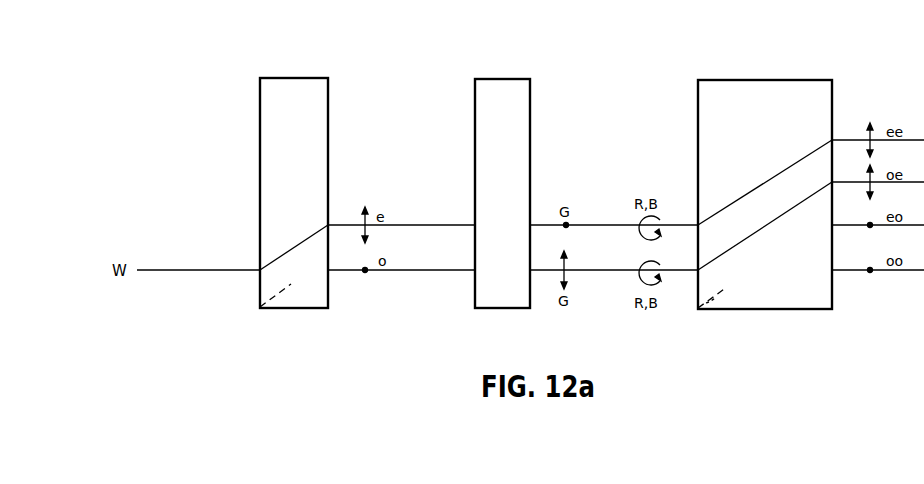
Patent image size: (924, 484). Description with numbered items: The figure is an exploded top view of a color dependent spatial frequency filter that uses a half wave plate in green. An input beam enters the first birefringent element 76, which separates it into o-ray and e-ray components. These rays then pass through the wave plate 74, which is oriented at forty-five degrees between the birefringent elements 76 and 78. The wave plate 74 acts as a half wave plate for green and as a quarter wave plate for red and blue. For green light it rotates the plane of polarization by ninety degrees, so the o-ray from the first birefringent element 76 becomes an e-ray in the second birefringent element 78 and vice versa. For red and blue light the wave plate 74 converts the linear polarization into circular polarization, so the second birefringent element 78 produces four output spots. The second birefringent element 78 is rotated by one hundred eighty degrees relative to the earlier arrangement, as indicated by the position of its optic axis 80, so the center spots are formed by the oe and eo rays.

The wave plate 74 is at (494, 79).
The first birefringent element 76 is at (298, 78).
The second birefringent element 78 is at (760, 80).
The optic axis 80 is at (721, 311).